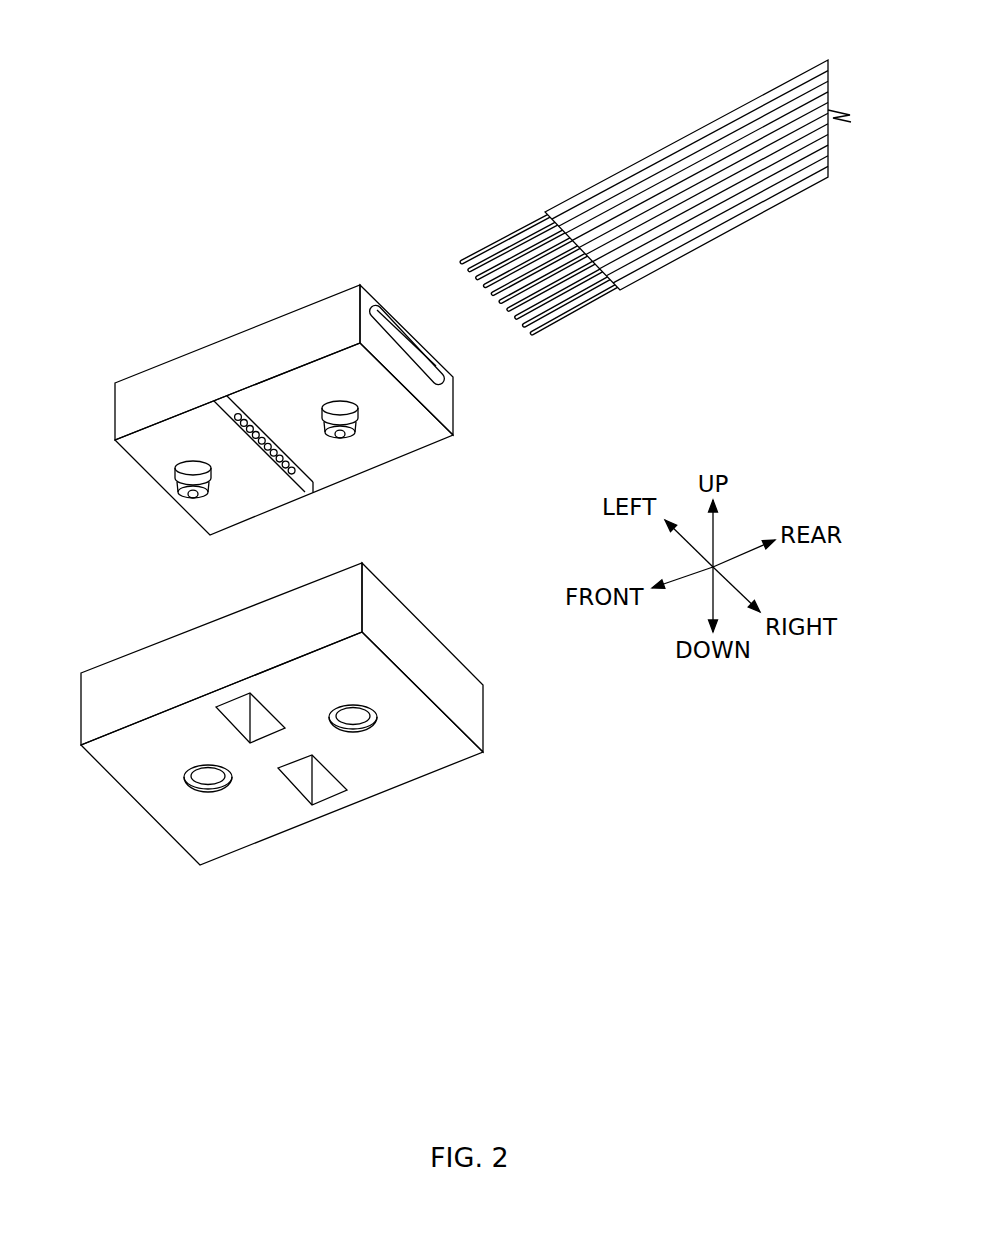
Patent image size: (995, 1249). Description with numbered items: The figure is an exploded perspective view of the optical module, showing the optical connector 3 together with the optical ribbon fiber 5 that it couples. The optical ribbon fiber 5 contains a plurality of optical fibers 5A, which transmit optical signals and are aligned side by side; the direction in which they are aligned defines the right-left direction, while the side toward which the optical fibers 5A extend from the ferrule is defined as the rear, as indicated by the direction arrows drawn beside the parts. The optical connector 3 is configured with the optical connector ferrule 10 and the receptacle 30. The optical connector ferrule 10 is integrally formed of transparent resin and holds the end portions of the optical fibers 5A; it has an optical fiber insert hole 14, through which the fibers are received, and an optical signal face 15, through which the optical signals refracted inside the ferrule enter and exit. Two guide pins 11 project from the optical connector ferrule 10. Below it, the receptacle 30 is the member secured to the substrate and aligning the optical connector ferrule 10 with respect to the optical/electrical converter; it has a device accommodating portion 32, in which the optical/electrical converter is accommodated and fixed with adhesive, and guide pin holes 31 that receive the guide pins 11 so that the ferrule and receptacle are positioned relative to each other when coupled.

The optical connector 3 is at (75, 322).
The optical ribbon fiber 5 is at (656, 172).
The optical fibers 5A is at (632, 173).
The optical connector ferrule 10 is at (317, 420).
The guide pins 11 is at (203, 475).
The optical fiber insert hole 14 is at (430, 367).
The optical signal face 15 is at (313, 486).
The receptacle 30 is at (280, 746).
The guide pin holes 31 is at (208, 778).
The device accommodating portion 32 is at (263, 723).